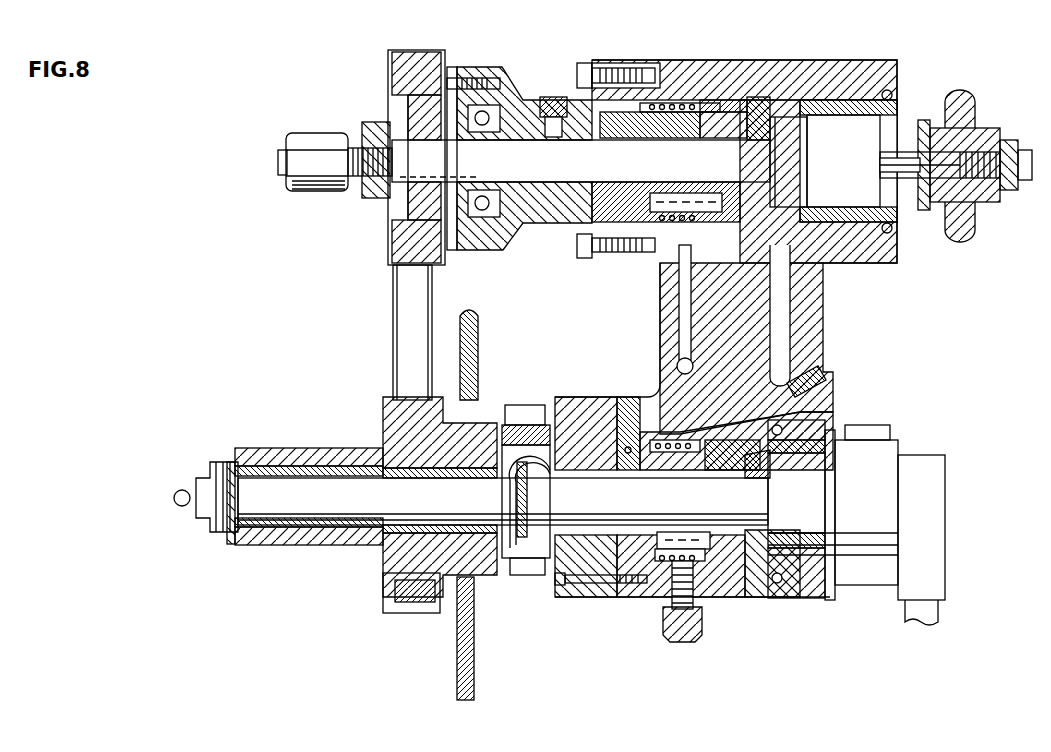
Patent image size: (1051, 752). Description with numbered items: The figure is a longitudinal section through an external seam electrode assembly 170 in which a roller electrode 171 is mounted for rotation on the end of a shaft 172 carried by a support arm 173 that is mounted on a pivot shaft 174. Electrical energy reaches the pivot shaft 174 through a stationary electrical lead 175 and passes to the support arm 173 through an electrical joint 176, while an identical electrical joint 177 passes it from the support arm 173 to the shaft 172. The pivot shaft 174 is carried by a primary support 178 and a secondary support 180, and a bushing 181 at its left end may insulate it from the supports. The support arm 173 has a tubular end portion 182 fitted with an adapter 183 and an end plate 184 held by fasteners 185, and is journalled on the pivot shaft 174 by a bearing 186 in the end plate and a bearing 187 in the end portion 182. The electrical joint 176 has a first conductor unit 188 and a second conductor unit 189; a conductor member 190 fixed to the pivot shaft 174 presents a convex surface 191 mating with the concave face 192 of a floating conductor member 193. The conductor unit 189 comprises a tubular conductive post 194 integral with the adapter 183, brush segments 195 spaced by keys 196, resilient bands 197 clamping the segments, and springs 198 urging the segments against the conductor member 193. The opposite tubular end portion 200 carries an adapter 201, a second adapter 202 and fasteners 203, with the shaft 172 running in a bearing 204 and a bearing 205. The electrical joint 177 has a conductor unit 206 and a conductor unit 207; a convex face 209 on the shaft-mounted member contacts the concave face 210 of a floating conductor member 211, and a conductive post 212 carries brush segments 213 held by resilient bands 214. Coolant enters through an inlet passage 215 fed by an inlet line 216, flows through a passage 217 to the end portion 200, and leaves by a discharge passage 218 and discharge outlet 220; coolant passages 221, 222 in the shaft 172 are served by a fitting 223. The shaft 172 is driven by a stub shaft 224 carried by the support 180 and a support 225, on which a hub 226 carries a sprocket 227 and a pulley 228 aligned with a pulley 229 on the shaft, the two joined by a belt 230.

The external seam electrode assembly 170 is at (343, 271).
The roller electrode 171 is at (982, 108).
The shaft 172 is at (526, 188).
The support arm 173 is at (833, 332).
The pivot shaft 174 is at (510, 499).
The stationary electrical lead 175 is at (935, 480).
The electrical joint 176 is at (730, 598).
The electrical joint 177 is at (707, 101).
The primary support 178 is at (900, 448).
The secondary support 180 is at (525, 400).
The bushing 181 is at (520, 558).
The tubular end portion 182 is at (802, 603).
The adapter 183 is at (608, 600).
The end plate 184 is at (570, 598).
The fasteners 185 is at (560, 592).
The bearing 186 is at (590, 520).
The bearing 187 is at (820, 594).
The first conductor unit 188 is at (765, 516).
The second conductor unit 189 is at (615, 533).
The conductor member 190 is at (836, 528).
The convex surface 191 is at (745, 430).
The concave face 192 is at (777, 463).
The conductor member 193 is at (780, 590).
The tubular conductive post 194 is at (708, 473).
The brush segments 195 is at (748, 473).
The keys 196 is at (692, 570).
The resilient bands 197 is at (675, 442).
The springs 198 is at (637, 420).
The tubular end portion 200 is at (832, 60).
The adapter 201 is at (610, 66).
The second adapter 202 is at (527, 98).
The fasteners 203 is at (577, 240).
The bearing 204 is at (470, 250).
The bearing 205 is at (855, 95).
The conductor unit 206 is at (733, 103).
The conductor unit 207 is at (722, 134).
The convex face 209 is at (760, 105).
The concave face 210 is at (843, 161).
The conductor member 211 is at (763, 132).
The conductive post 212 is at (656, 132).
The brush segments 213 is at (710, 215).
The resilient bands 214 is at (606, 118).
The inlet passage 215 is at (660, 582).
The inlet line 216 is at (685, 640).
The passage 217 is at (823, 284).
The discharge passage 218 is at (675, 298).
The discharge outlet 220 is at (680, 362).
The coolant passage 221 is at (880, 165).
The coolant passage 222 is at (913, 114).
The fitting 223 is at (310, 135).
The stub shaft 224 is at (270, 530).
The support 225 is at (270, 447).
The hub 226 is at (478, 400).
The sprocket 227 is at (457, 632).
The pulley 228 is at (380, 578).
The pulley 229 is at (390, 78).
The belt 230 is at (400, 330).